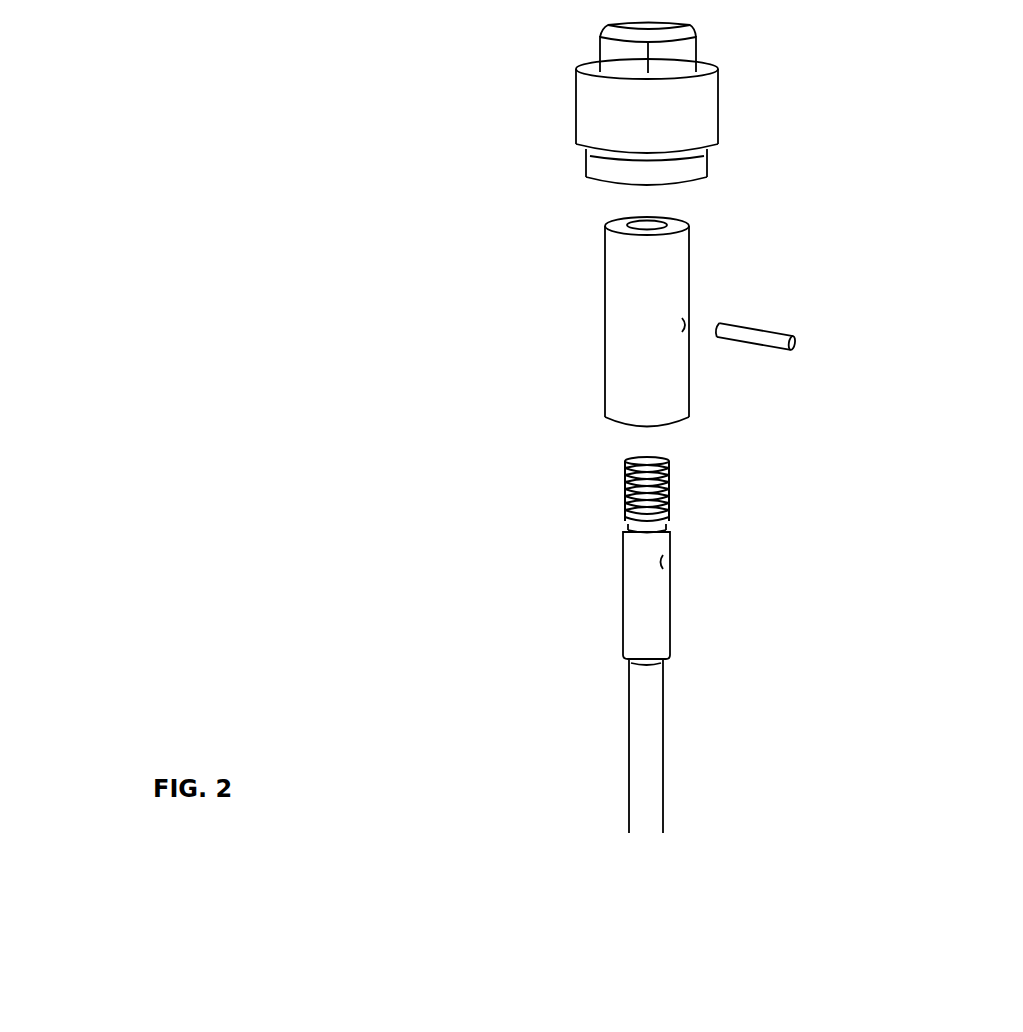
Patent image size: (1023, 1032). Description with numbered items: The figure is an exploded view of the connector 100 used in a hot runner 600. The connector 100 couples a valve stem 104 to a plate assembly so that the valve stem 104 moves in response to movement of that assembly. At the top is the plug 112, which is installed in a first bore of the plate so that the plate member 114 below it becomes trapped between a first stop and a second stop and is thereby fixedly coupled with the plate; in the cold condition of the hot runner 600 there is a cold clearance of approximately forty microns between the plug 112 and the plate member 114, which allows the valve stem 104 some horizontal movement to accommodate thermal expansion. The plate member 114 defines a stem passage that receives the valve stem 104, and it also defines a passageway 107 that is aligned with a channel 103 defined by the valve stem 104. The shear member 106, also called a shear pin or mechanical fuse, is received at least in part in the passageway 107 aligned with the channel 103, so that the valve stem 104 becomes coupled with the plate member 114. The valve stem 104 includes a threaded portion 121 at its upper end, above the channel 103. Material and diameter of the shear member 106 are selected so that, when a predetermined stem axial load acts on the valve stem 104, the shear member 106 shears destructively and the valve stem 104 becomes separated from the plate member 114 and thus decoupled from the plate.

The connector 100 is at (932, 373).
The hot runner 600 is at (536, 106).
The plug 112 is at (693, 109).
The plate member 114 is at (690, 257).
The passageway 107 is at (680, 325).
The shear member 106 is at (797, 338).
The threaded portion 121 is at (625, 496).
The channel 103 is at (668, 562).
The valve stem 104 is at (663, 695).